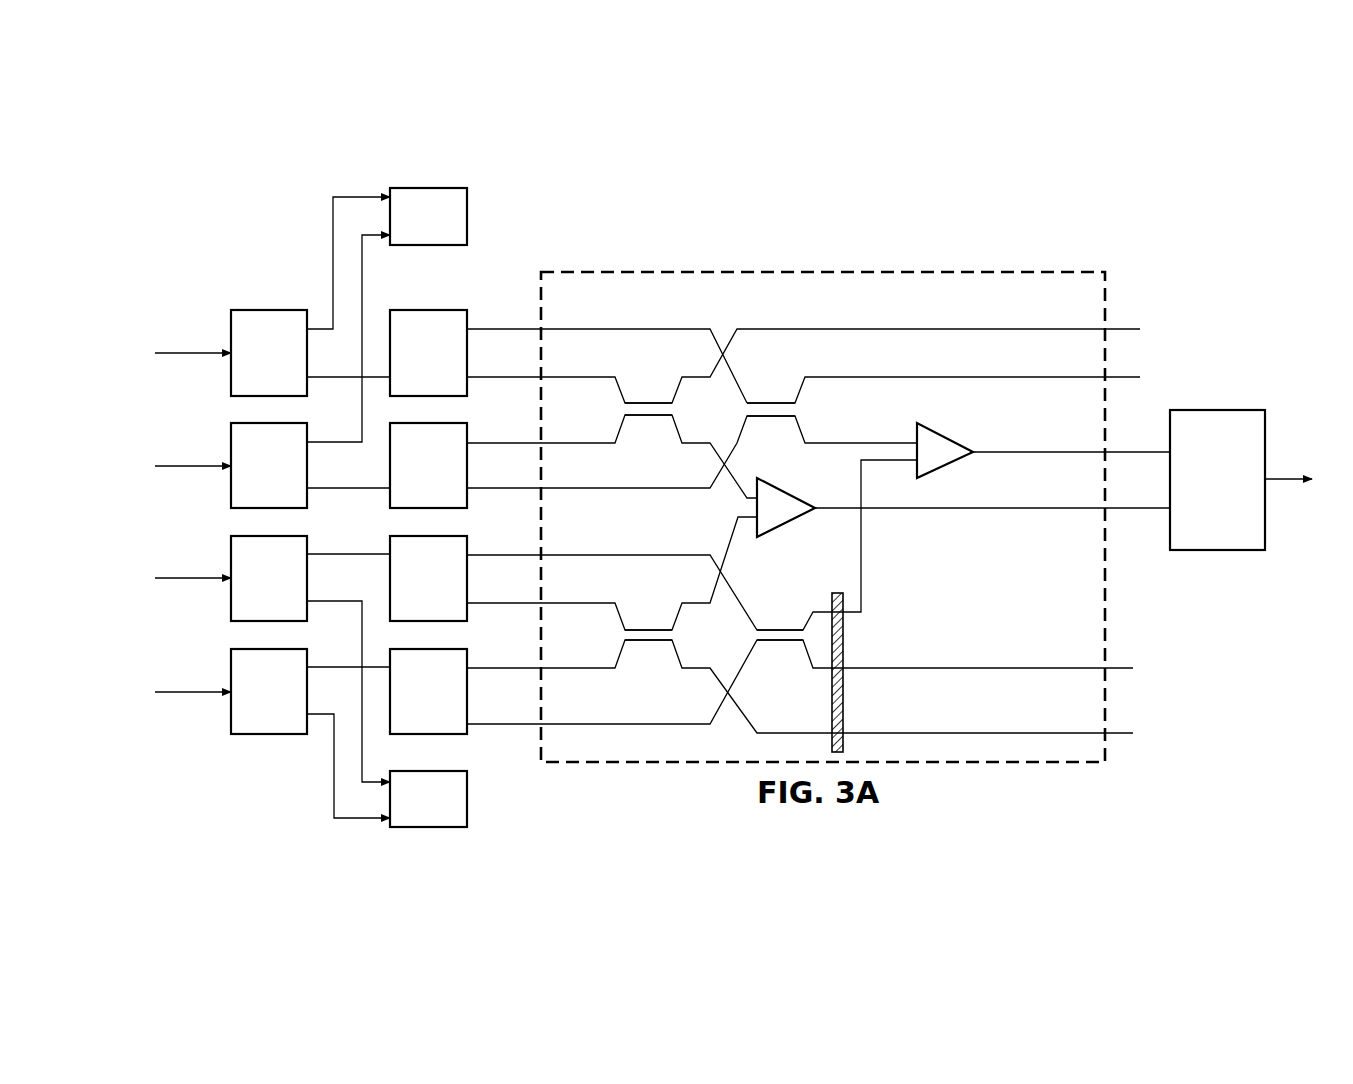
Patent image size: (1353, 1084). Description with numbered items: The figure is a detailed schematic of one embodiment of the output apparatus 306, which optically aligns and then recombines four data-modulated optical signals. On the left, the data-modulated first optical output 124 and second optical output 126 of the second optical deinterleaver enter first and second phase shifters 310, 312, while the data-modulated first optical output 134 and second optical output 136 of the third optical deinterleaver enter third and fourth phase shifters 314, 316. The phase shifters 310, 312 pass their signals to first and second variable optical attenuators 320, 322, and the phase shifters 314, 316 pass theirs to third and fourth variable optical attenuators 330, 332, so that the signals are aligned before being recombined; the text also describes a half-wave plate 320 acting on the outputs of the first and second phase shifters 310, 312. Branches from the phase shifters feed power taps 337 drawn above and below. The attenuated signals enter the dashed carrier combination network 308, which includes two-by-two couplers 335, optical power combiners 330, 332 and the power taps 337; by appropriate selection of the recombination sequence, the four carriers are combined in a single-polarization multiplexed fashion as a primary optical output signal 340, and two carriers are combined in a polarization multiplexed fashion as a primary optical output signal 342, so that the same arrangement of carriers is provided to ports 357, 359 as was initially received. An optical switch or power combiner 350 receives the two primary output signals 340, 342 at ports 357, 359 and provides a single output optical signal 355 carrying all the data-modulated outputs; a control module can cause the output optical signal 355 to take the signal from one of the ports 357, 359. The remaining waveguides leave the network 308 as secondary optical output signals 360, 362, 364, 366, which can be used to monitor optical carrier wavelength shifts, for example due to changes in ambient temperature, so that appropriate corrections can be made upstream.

The output apparatus 306 is at (250, 225).
The carrier combination network 308 is at (992, 271).
The power tap 337 is at (428, 186).
The data-modulated second optical output of the third optical deinterleaver 136 is at (193, 360).
The data-modulated first optical output of the third optical deinterleaver 134 is at (193, 473).
The data-modulated second optical output of the second optical deinterleaver 126 is at (193, 585).
The data-modulated first optical output of the second optical deinterleaver 124 is at (193, 699).
The fourth phase shifter 316 is at (269, 353).
The third phase shifter 314 is at (269, 465).
The second phase shifter 312 is at (269, 578).
The first phase shifter 310 is at (269, 691).
The fourth variable optical attenuator / optical power combiner 332 is at (955, 416).
The third variable optical attenuator / optical power combiner 330 is at (797, 471).
The second variable optical attenuator 322 is at (428, 578).
The first variable optical attenuator / half-wave plate 320 is at (830, 697).
The 2×2 coupler 335 is at (617, 408).
The primary optical output signal 340 is at (973, 510).
The primary optical output signal 342 is at (1127, 456).
The optical switch or power combiner 350 is at (1217, 480).
The output optical signal 355 is at (1285, 476).
The output port 357 is at (1168, 514).
The output port 359 is at (1166, 448).
The secondary optical output signal 360 is at (1123, 737).
The secondary optical output signal 362 is at (1123, 672).
The secondary optical output signal 364 is at (1123, 377).
The secondary optical output signal 366 is at (1123, 329).